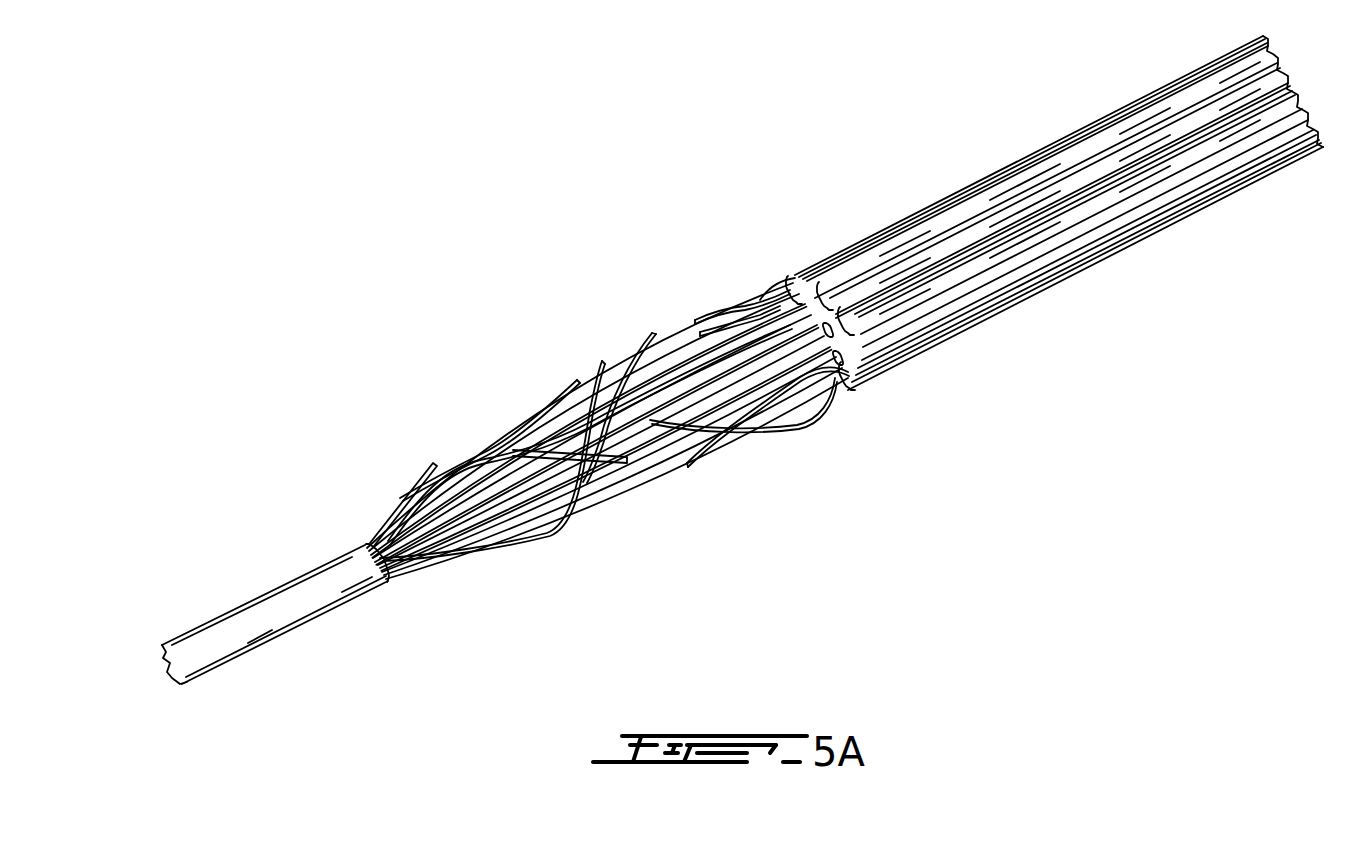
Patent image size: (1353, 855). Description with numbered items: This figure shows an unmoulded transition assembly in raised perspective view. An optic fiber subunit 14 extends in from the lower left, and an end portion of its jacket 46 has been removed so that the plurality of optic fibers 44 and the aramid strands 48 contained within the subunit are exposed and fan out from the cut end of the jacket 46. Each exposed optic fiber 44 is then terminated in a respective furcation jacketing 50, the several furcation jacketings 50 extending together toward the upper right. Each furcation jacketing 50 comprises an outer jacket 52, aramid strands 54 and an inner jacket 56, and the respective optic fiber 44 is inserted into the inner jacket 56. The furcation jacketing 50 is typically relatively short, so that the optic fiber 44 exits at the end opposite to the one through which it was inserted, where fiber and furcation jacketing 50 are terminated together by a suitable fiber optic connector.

The optic fiber subunit 14 is at (199, 645).
The optic fibers 44 is at (648, 457).
The jacket 46 is at (337, 612).
The aramid strands 48 is at (388, 535).
The furcation jacketing 50 is at (970, 270).
The outer jacket 52 is at (803, 280).
The aramid strands 54 is at (742, 330).
The inner jacket 56 is at (830, 385).